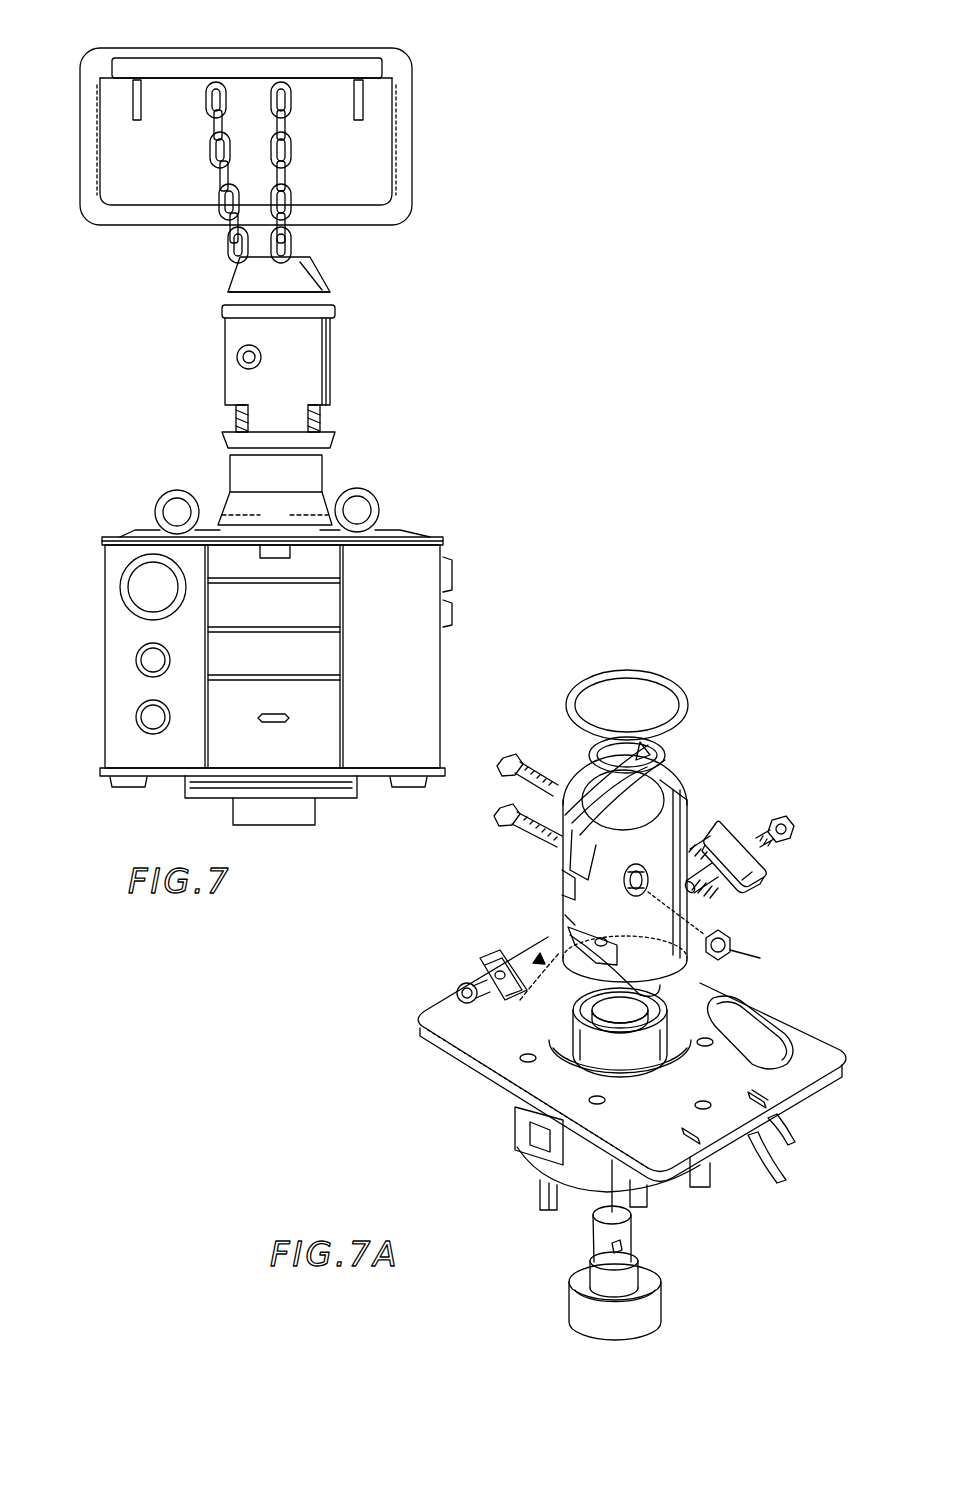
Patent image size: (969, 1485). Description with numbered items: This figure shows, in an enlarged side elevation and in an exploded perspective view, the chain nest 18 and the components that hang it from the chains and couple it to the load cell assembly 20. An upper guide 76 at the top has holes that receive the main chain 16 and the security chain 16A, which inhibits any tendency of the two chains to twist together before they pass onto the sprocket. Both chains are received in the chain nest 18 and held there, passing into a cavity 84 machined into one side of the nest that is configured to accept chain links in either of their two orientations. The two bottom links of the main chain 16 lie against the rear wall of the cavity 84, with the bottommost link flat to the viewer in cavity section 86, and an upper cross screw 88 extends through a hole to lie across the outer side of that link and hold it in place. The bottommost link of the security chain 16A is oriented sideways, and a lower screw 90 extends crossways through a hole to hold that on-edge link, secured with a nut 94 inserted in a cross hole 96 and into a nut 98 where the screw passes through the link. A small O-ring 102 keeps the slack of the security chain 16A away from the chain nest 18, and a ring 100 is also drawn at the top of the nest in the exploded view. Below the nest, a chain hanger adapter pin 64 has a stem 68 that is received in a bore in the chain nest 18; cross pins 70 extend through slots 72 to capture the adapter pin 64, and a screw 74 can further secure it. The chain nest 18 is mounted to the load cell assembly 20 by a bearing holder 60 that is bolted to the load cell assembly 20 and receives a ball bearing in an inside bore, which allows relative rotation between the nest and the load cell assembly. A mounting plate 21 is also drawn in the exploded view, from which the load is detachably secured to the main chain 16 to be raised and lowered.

In FIG. 7, the main chain 16 is at (292, 165).
In FIG. 7, the security chain 16A is at (212, 180).
In FIG. 7, the upper guide 76 is at (182, 66).
In FIG. 7, the chain nest 18 is at (338, 355).
In FIG. 7A, the chain nest 18 is at (690, 905).
In FIG. 7, the load cell assembly 20 is at (97, 560).
In FIG. 7, the mounting plate 21 is at (433, 538).
In FIG. 7A, the mounting plate 21 is at (430, 1002).
In FIG. 7A, the bearing holder 60 is at (593, 1060).
In FIG. 7A, the chain hanger adapter pin 64 is at (560, 1298).
In FIG. 7A, the stem 68 is at (592, 1242).
In FIG. 7, the cross pins 70 is at (322, 418).
In FIG. 7A, the cross pins 70 is at (714, 838).
In FIG. 7A, the slots 72 is at (623, 1244).
In FIG. 7, the screw 74 is at (234, 418).
In FIG. 7A, the screw 74 is at (490, 975).
In FIG. 7A, the cavity 84 is at (588, 793).
In FIG. 7A, the cavity section 86 is at (572, 840).
In FIG. 7A, the upper cross screw 88 is at (540, 772).
In FIG. 7, the lower screw 90 is at (290, 293).
In FIG. 7A, the lower screw 90 is at (676, 798).
In FIG. 7A, the nut 94 is at (503, 822).
In FIG. 7A, the cross hole 96 is at (625, 890).
In FIG. 7, the nut 98 is at (240, 358).
In FIG. 7A, the nut 98 is at (731, 942).
In FIG. 7, the O-ring 100 is at (228, 312).
In FIG. 7A, the O-ring 100 is at (672, 690).
In FIG. 7A, the O-ring 102 is at (562, 888).